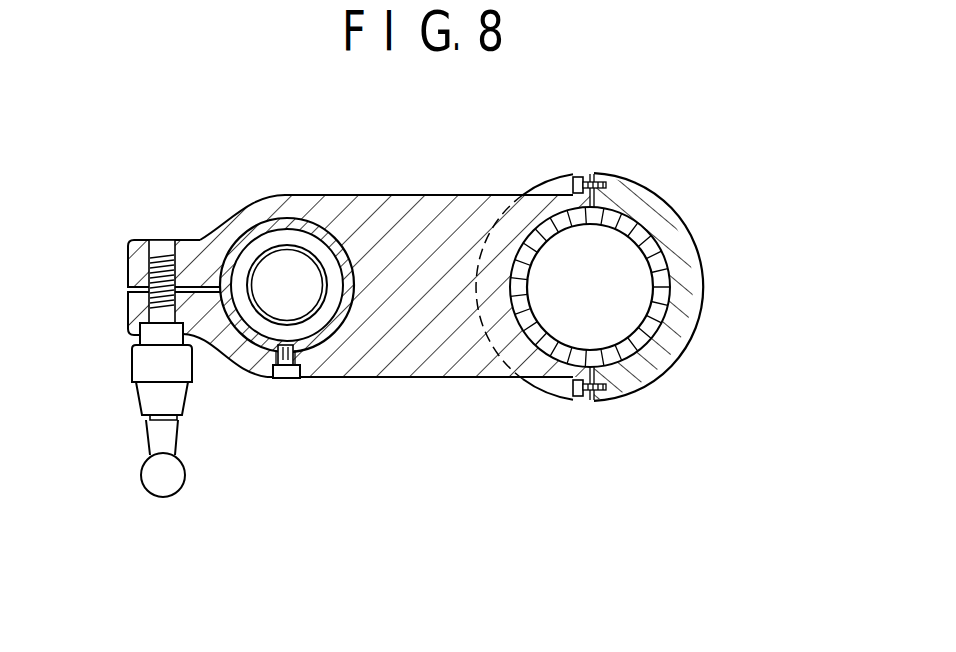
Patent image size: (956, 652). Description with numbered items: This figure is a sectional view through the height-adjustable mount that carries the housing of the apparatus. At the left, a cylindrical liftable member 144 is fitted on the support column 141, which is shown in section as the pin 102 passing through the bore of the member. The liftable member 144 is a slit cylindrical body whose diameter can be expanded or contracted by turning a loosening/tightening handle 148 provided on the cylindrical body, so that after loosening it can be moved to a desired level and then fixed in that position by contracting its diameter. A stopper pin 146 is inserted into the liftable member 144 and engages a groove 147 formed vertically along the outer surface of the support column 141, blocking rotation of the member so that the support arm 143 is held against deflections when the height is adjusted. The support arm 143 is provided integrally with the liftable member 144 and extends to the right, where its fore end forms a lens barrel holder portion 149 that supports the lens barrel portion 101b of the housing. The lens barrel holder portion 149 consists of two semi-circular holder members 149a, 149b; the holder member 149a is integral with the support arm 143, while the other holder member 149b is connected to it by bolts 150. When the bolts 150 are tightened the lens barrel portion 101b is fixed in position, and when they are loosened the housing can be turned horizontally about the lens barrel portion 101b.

The lens barrel portion 101b is at (667, 262).
The pivot pin 102 is at (318, 295).
The support column 141 is at (293, 232).
The support arm 143 is at (424, 207).
The liftable member 144 is at (245, 212).
The stopper pin 146 is at (285, 378).
The groove 147 is at (300, 358).
The loosening/tightening handle 148 is at (135, 385).
The lens barrel holder portion 149 is at (657, 397).
The holder member 149a is at (525, 362).
The holder member 149b is at (690, 317).
The bolts 150 is at (580, 177).